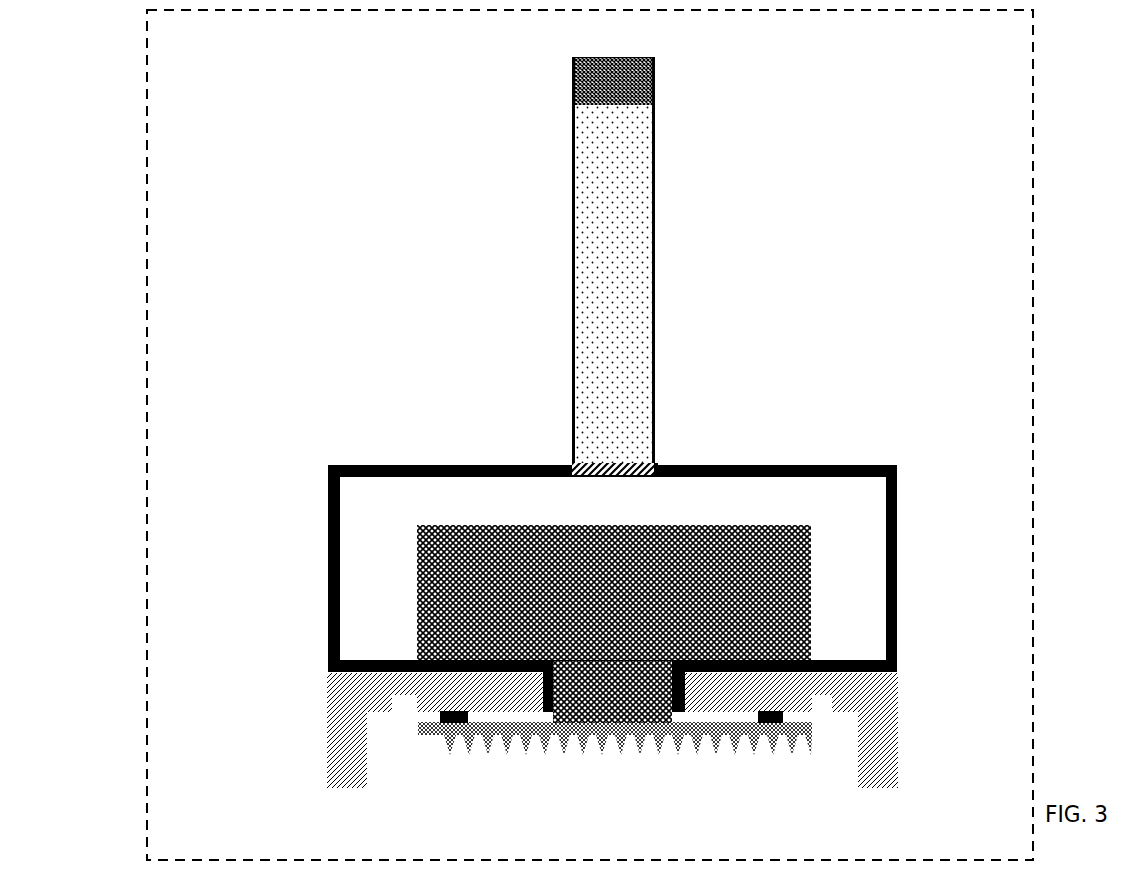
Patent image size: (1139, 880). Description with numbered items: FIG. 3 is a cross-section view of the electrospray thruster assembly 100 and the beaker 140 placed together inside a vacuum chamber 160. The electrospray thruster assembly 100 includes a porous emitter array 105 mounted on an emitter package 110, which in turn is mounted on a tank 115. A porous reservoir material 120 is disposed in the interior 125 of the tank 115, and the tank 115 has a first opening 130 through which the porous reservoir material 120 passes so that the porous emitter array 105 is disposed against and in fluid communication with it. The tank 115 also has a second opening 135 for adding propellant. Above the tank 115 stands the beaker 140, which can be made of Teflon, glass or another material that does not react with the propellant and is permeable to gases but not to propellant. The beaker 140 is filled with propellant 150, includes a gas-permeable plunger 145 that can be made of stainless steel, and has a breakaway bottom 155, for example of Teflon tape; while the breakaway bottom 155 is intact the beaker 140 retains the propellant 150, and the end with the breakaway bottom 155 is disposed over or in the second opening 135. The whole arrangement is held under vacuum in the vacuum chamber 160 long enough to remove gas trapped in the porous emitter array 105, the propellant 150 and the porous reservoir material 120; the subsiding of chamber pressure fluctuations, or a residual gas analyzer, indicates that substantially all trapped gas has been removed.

The electrospray thruster assembly 100 is at (547, 800).
The porous emitter array 105 is at (422, 725).
The emitter package 110 is at (332, 685).
The tank 115 is at (327, 502).
The porous reservoir material 120 is at (812, 592).
The interior 125 is at (396, 516).
The first opening 130 is at (680, 717).
The second opening 135 is at (656, 464).
The beaker 140 is at (603, 261).
The plunger 145 is at (588, 83).
The propellant 150 is at (613, 180).
The breakaway bottom 155 is at (580, 473).
The vacuum chamber 160 is at (203, 50).